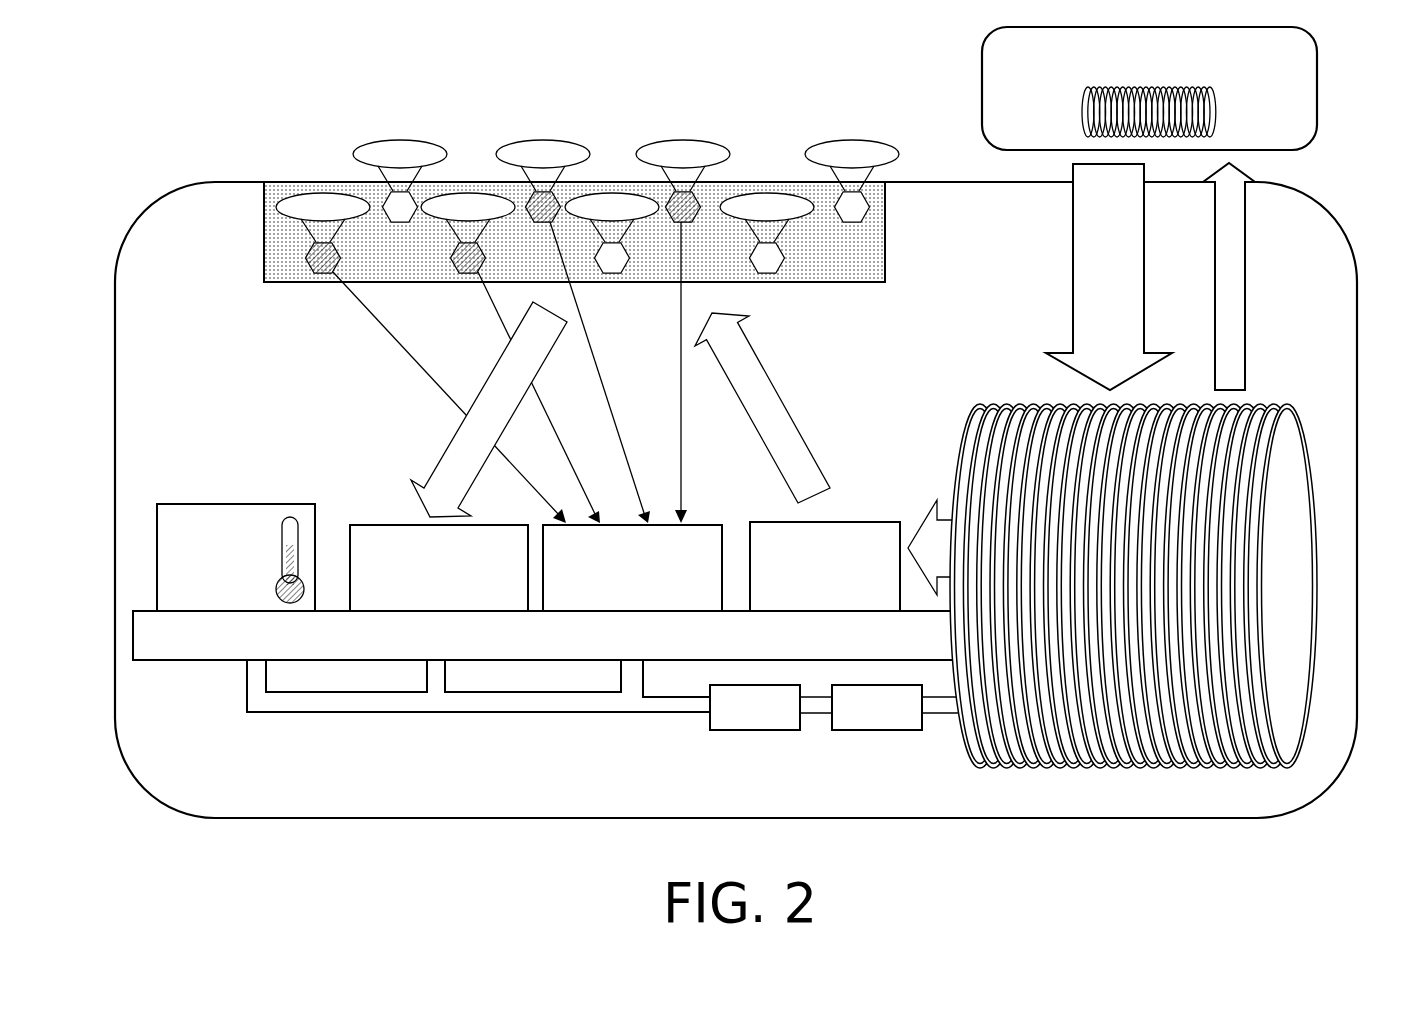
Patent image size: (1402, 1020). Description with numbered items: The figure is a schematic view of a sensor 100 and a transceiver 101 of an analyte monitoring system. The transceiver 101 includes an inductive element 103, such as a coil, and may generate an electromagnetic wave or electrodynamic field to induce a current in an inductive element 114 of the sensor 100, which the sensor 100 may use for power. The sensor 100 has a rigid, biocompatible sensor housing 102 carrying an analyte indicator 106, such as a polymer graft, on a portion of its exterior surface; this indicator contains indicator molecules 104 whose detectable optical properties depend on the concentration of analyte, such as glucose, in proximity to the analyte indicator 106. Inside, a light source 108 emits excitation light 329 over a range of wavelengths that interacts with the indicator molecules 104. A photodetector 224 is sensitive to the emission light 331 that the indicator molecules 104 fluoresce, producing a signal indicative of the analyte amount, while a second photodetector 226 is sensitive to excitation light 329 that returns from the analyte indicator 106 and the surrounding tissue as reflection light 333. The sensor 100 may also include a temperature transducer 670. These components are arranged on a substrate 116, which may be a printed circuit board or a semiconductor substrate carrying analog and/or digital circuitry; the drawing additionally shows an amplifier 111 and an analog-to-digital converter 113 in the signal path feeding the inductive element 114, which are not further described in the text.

The sensor 100 is at (141, 166).
The transceiver 101 is at (1127, 88).
The sensor housing 102 is at (265, 818).
The inductive element 103 is at (1238, 90).
The indicator molecules 104 is at (584, 95).
The analyte indicator 106 is at (264, 253).
The light source 108 is at (868, 522).
The amplifier 111 is at (760, 731).
The analog-to-digital converter 113 is at (890, 731).
The inductive element 114 is at (1140, 775).
The substrate 116 is at (217, 660).
The photodetector 224 is at (697, 525).
The photodetector 226 is at (385, 525).
The excitation light 329 is at (803, 432).
The emission light 331 is at (437, 378).
The reflection light 333 is at (453, 437).
The temperature transducer 670 is at (225, 504).